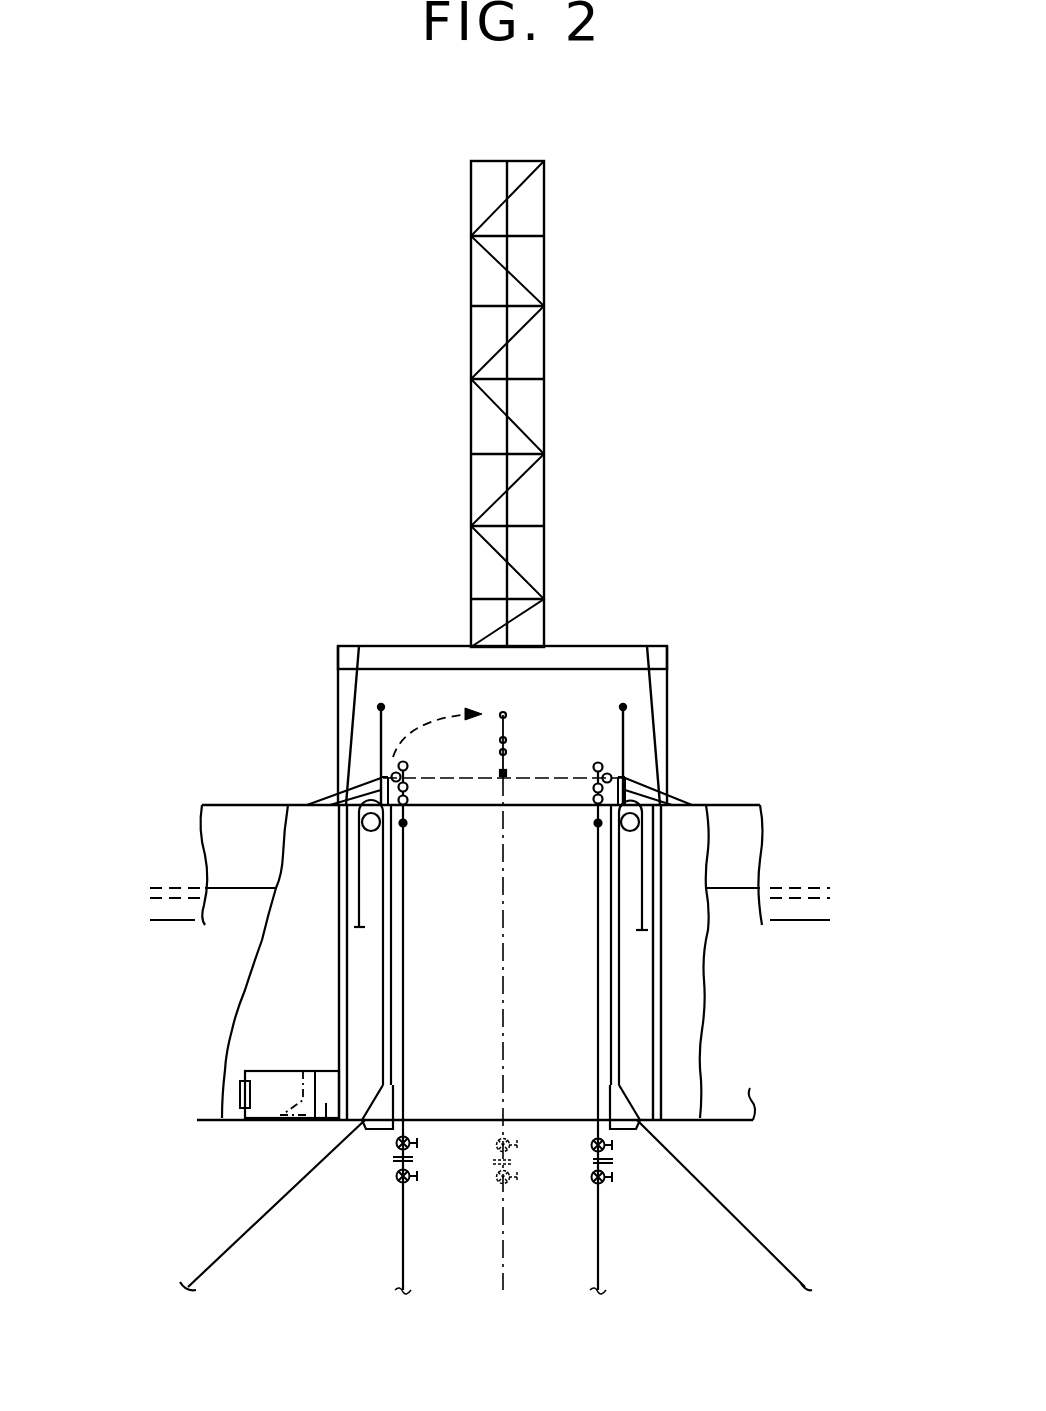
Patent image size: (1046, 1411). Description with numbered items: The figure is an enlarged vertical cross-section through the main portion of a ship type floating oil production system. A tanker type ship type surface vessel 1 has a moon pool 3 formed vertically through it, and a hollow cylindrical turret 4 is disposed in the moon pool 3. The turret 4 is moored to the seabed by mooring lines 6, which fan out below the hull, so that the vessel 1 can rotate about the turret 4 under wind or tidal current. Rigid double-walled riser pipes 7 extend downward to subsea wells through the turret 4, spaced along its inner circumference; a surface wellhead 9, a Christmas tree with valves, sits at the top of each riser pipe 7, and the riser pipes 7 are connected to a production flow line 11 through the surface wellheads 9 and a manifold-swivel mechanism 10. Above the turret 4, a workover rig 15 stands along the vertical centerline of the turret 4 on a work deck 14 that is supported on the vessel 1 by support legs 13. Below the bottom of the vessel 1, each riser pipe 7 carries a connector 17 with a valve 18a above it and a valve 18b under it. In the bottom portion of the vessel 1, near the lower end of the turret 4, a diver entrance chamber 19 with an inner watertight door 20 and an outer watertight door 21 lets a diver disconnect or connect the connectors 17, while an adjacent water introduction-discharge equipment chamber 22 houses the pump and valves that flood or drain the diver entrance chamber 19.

The ship type surface vessel 1 is at (685, 813).
The moon pool 3 is at (660, 920).
The cylindrical turret 4 is at (655, 975).
The mooring lines 6 is at (712, 1200).
The riser pipes 7 is at (403, 981).
The surface wellhead 9 is at (408, 786).
The manifold-swivel mechanism 10 is at (347, 797).
The production flow line 11 is at (380, 730).
The support legs 13 is at (346, 692).
The work deck 14 is at (582, 645).
The workover rig 15 is at (546, 436).
The connector 17 is at (410, 1160).
The valve 18a is at (397, 1143).
The valve 18b is at (398, 1177).
The diver entrance chamber 19 is at (275, 1083).
The inner watertight door 20 is at (243, 1095).
The outer watertight door 21 is at (308, 1078).
The water introduction-discharge equipment chamber 22 is at (326, 1106).